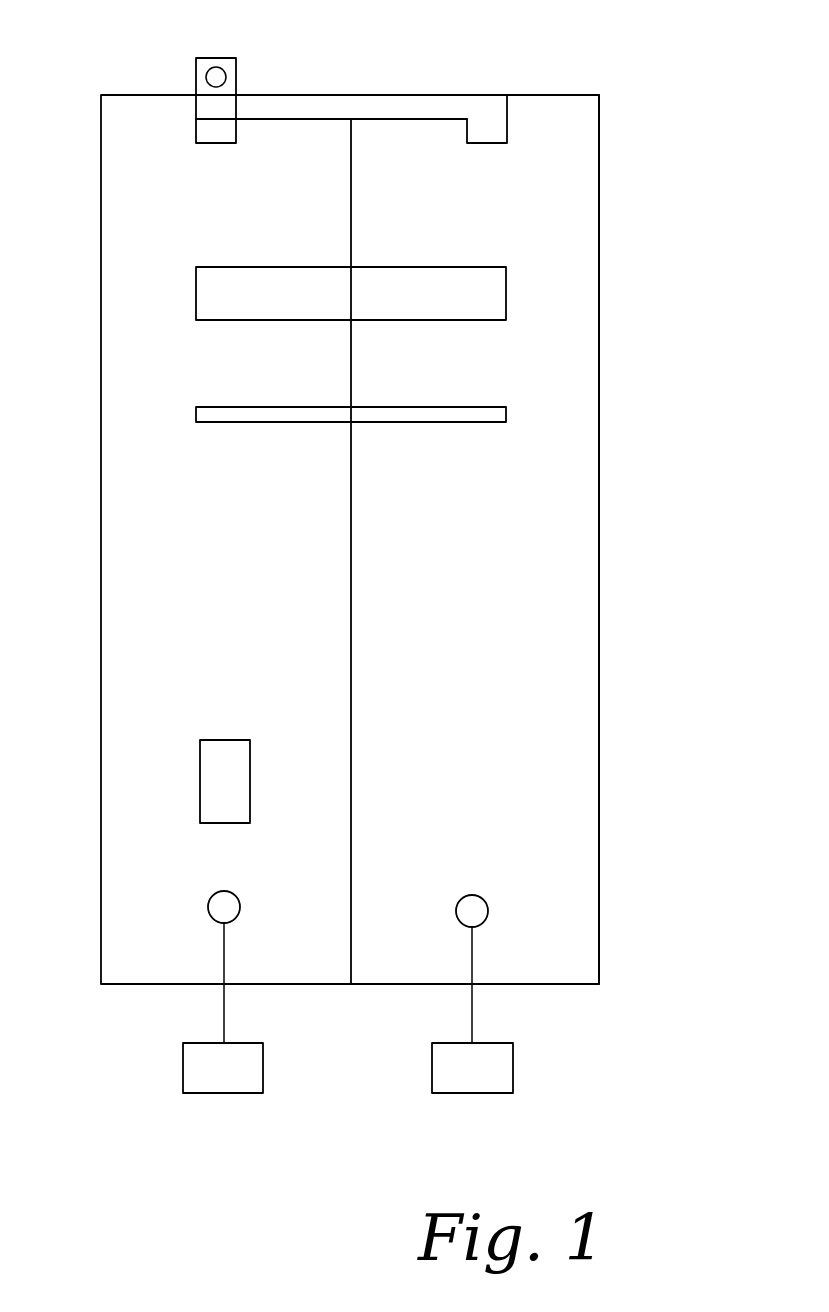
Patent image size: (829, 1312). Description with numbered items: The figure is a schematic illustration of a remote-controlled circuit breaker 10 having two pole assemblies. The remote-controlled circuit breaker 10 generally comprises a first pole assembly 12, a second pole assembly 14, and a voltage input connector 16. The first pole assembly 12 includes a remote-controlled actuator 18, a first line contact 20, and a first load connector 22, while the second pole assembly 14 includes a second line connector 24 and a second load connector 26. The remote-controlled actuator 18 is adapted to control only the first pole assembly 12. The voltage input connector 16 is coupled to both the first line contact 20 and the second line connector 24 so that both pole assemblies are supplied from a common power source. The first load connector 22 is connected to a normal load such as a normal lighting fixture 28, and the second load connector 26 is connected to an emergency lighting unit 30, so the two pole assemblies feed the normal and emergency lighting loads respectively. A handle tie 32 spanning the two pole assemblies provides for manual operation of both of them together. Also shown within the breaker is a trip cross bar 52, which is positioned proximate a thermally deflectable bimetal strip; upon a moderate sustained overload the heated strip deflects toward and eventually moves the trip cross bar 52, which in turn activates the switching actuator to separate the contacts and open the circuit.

The remote-controlled circuit breaker 10 is at (676, 50).
The first pole assembly 12 is at (150, 579).
The second pole assembly 14 is at (560, 563).
The voltage input connector 16 is at (195, 62).
The remote-controlled actuator 18 is at (213, 769).
The first line contact 20 is at (207, 135).
The first load connector 22 is at (208, 905).
The second line connector 24 is at (497, 133).
The second load connector 26 is at (486, 913).
The normal lighting fixture 28 is at (200, 1062).
The emergency lighting unit 30 is at (500, 1066).
The handle tie 32 is at (207, 284).
The trip cross bar 52 is at (207, 410).